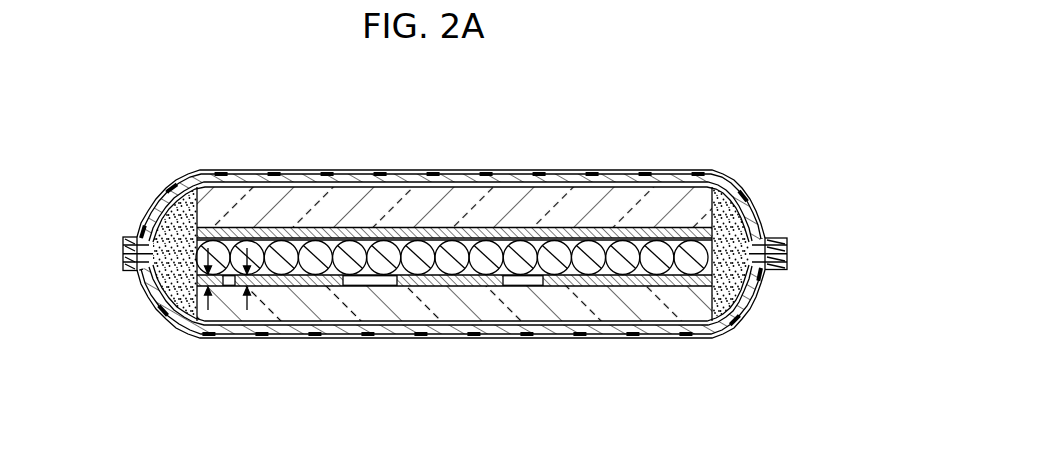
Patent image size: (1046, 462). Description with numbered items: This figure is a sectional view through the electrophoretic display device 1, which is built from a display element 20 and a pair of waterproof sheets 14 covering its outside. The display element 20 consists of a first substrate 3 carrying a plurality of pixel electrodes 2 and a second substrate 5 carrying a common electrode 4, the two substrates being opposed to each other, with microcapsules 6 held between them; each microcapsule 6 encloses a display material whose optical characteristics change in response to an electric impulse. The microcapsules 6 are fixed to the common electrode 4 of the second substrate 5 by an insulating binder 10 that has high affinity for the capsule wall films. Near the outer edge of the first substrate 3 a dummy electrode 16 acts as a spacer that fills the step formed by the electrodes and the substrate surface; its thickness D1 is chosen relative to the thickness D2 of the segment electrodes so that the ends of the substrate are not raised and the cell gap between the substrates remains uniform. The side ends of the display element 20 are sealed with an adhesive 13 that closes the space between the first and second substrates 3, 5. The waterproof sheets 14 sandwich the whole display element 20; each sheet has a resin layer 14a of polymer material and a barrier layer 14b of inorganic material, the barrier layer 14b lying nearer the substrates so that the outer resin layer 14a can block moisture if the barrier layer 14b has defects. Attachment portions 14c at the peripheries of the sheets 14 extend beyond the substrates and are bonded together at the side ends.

The electrophoretic display device 1 is at (462, 128).
The pixel electrodes 2 is at (592, 293).
The first substrate 3 is at (725, 323).
The common electrode 4 is at (732, 232).
The second substrate 5 is at (733, 190).
The microcapsules 6 is at (525, 262).
The binder 10 is at (397, 281).
The adhesive 13 is at (147, 218).
The waterproof sheets 14 is at (315, 110).
The resin layer 14a is at (292, 177).
The barrier layer 14b is at (253, 175).
The attachment portions 14c is at (123, 242).
The dummy electrode 16 is at (153, 297).
The display element 20 is at (581, 165).
The thickness of the dummy electrode D1 is at (208, 310).
The thickness of the segment electrodes D2 is at (247, 310).